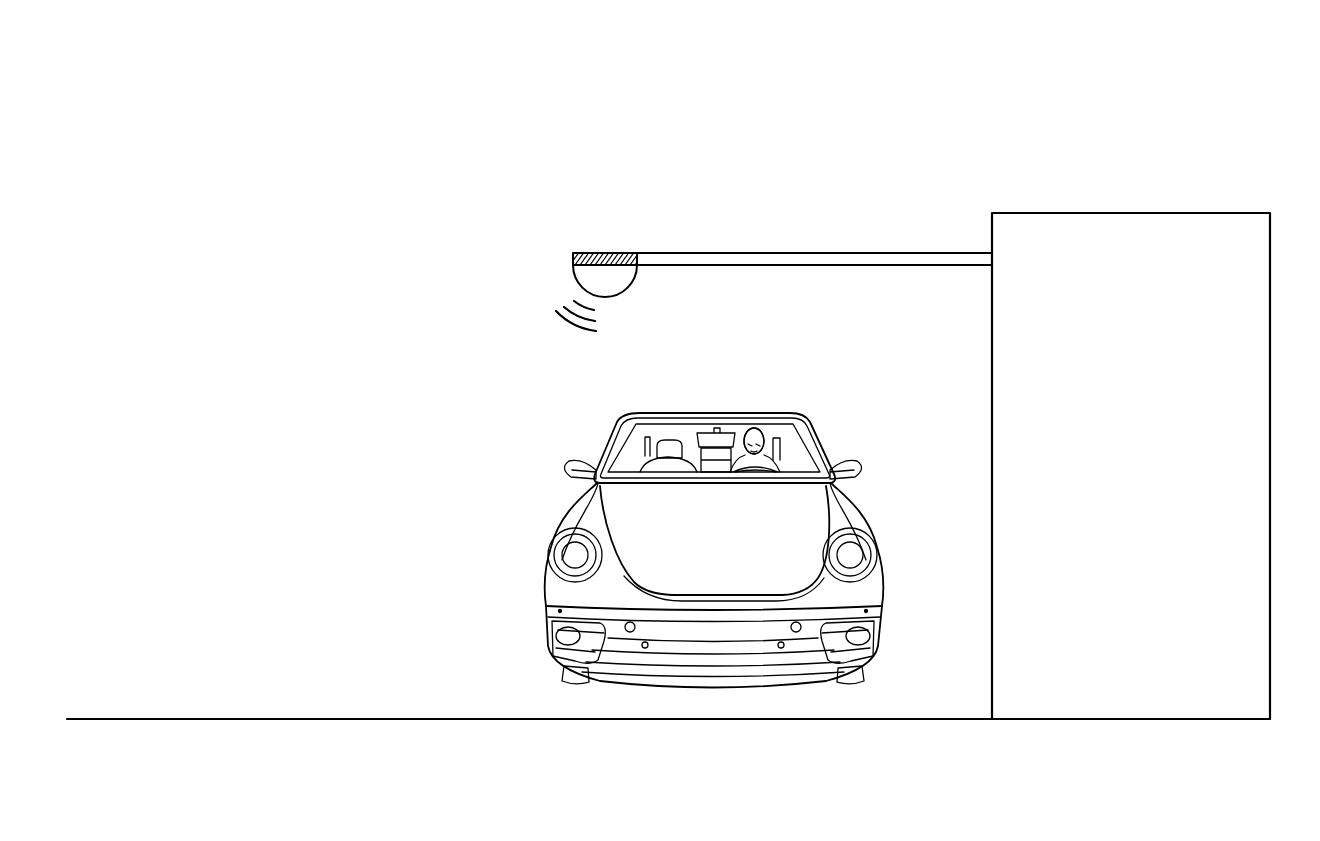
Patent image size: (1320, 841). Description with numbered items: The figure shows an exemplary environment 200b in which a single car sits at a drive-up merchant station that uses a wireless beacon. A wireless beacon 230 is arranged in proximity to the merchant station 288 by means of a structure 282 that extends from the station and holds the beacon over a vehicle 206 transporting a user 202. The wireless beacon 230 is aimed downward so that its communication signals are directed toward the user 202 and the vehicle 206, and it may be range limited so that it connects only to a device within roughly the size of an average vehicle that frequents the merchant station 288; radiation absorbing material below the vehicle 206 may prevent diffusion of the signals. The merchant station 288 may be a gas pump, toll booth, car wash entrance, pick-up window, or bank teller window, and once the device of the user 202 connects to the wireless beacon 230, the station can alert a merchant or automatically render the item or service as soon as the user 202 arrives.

The environment 200b is at (1074, 128).
The wireless beacon 230 is at (612, 252).
The structure 282 is at (796, 252).
The merchant station 288 is at (1153, 270).
The vehicle 206 is at (776, 392).
The user 202 is at (775, 443).